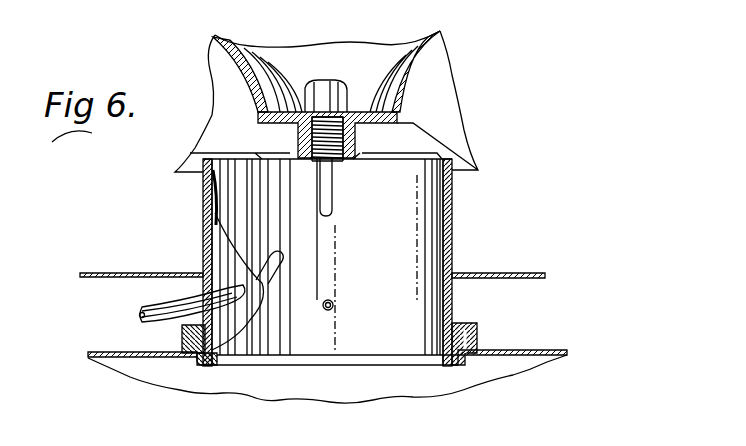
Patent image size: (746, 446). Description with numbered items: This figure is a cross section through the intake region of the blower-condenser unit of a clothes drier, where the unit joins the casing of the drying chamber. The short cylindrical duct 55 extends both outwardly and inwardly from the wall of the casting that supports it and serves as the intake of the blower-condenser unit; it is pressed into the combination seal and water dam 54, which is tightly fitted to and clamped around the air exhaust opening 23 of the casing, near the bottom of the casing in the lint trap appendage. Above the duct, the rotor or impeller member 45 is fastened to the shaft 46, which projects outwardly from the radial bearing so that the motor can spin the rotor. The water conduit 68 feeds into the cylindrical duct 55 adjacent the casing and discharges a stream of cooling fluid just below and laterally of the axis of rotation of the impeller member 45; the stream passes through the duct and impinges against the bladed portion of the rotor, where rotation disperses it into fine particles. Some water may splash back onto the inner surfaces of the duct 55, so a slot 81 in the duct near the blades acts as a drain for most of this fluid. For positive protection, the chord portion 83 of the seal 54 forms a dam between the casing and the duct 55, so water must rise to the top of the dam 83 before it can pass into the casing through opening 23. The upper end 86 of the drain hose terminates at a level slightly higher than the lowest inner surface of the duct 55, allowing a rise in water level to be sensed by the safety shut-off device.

The air exhaust opening 23 is at (322, 365).
The rotor or impeller member 45 is at (427, 80).
The shaft 46 is at (343, 93).
The combination seal and water dam 54 is at (478, 330).
The cylindrical duct 55 is at (453, 231).
The water conduit 68 is at (142, 322).
The slot 81 is at (263, 253).
The chord portion 83 is at (270, 366).
The upper end of drain hose 86 is at (337, 305).